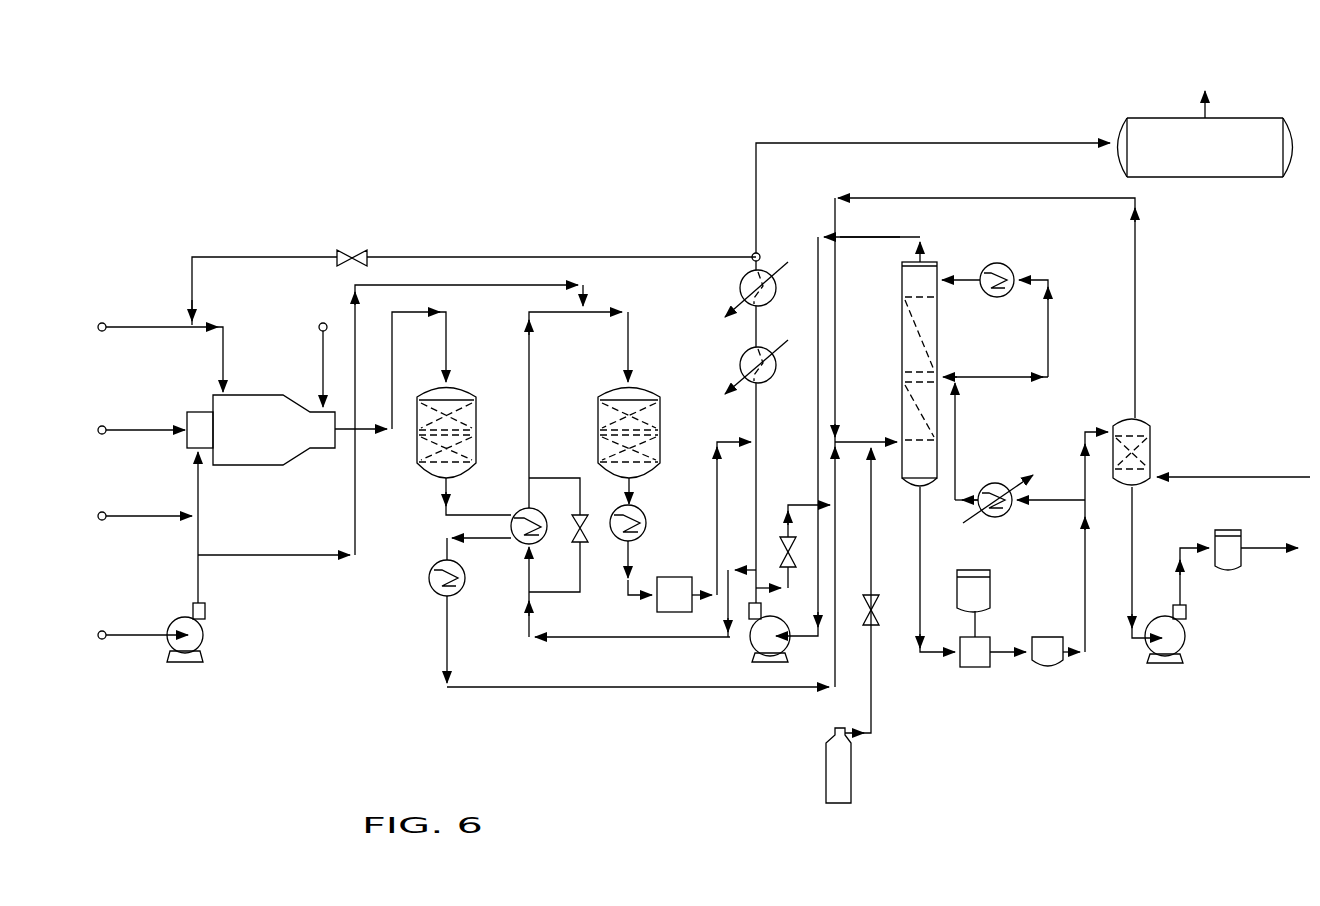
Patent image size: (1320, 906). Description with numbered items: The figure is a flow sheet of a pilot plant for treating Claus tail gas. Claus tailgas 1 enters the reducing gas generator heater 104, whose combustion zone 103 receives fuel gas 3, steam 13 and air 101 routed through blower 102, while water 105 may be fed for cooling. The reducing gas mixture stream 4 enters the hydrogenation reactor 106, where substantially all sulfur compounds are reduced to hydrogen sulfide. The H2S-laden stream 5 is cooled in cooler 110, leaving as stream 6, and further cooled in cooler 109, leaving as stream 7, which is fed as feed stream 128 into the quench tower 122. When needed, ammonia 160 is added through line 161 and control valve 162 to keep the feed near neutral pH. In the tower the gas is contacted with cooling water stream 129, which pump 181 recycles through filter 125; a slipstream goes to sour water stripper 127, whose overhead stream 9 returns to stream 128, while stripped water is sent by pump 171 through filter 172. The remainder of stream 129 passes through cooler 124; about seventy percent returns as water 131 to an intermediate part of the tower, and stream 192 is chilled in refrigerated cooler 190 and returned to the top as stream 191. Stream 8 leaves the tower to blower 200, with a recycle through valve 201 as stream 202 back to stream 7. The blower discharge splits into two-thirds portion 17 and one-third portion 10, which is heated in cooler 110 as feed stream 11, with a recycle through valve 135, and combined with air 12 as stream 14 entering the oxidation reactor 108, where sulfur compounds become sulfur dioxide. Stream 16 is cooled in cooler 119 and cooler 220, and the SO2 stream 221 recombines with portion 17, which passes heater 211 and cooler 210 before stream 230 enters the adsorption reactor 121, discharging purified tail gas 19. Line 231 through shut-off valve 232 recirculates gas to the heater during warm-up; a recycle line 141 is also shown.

The Claus tailgas 1 is at (182, 327).
The fuel gas 3 is at (158, 431).
The reducing gas mixture stream 4 is at (393, 373).
The H2S-laden stream 5 is at (440, 488).
The stream 6 is at (445, 553).
The stream 7 is at (450, 662).
The stream 8 is at (875, 237).
The overhead stream 9 is at (836, 347).
The one-third portion 10 is at (748, 570).
The feed stream 11 is at (531, 378).
The air 12 is at (325, 560).
The steam 13 is at (133, 518).
The stream 14 is at (629, 347).
The stream 16 is at (626, 596).
The two-thirds portion 17 is at (757, 468).
The purified tail gas 19 is at (1200, 118).
The air 101 is at (137, 637).
The blower 102 is at (247, 648).
The combustion zone 103 is at (197, 412).
The reducing gas generator heater 104 is at (238, 467).
The water 105 is at (322, 380).
The hydrogenation reactor 106 is at (470, 388).
The oxidation reactor 108 is at (661, 417).
The cooler 109 is at (430, 573).
The cooler 110 is at (524, 510).
The cooler 119 is at (646, 518).
The adsorption reactor 121 is at (1165, 178).
The quench tower 122 is at (968, 333).
The cooler 124 is at (980, 485).
The filter 125 is at (1060, 668).
The sour water stripper 127 is at (1151, 442).
The feed stream 128 is at (843, 441).
The cooling water stream 129 is at (921, 583).
The water 131 is at (965, 377).
The valve 135 is at (571, 530).
The recycle line 141 is at (1085, 470).
The ammonia 160 is at (852, 797).
The line 161 is at (871, 703).
The control valve 162 is at (872, 612).
The pump 171 is at (1185, 650).
The filter 172 is at (1228, 530).
The pump 181 is at (982, 637).
The refrigerated cooler 190 is at (1000, 263).
The stream 191 is at (972, 279).
The stream 192 is at (1049, 355).
The blower 200 is at (748, 641).
The valve 201 is at (793, 566).
The stream 202 is at (772, 586).
The cooler 210 is at (742, 288).
The heater 211 is at (742, 367).
The cooler 220 is at (676, 577).
The SO2 stream 221 is at (716, 540).
The stream 230 is at (834, 143).
The line 231 is at (462, 257).
The shut-off valve 232 is at (352, 252).